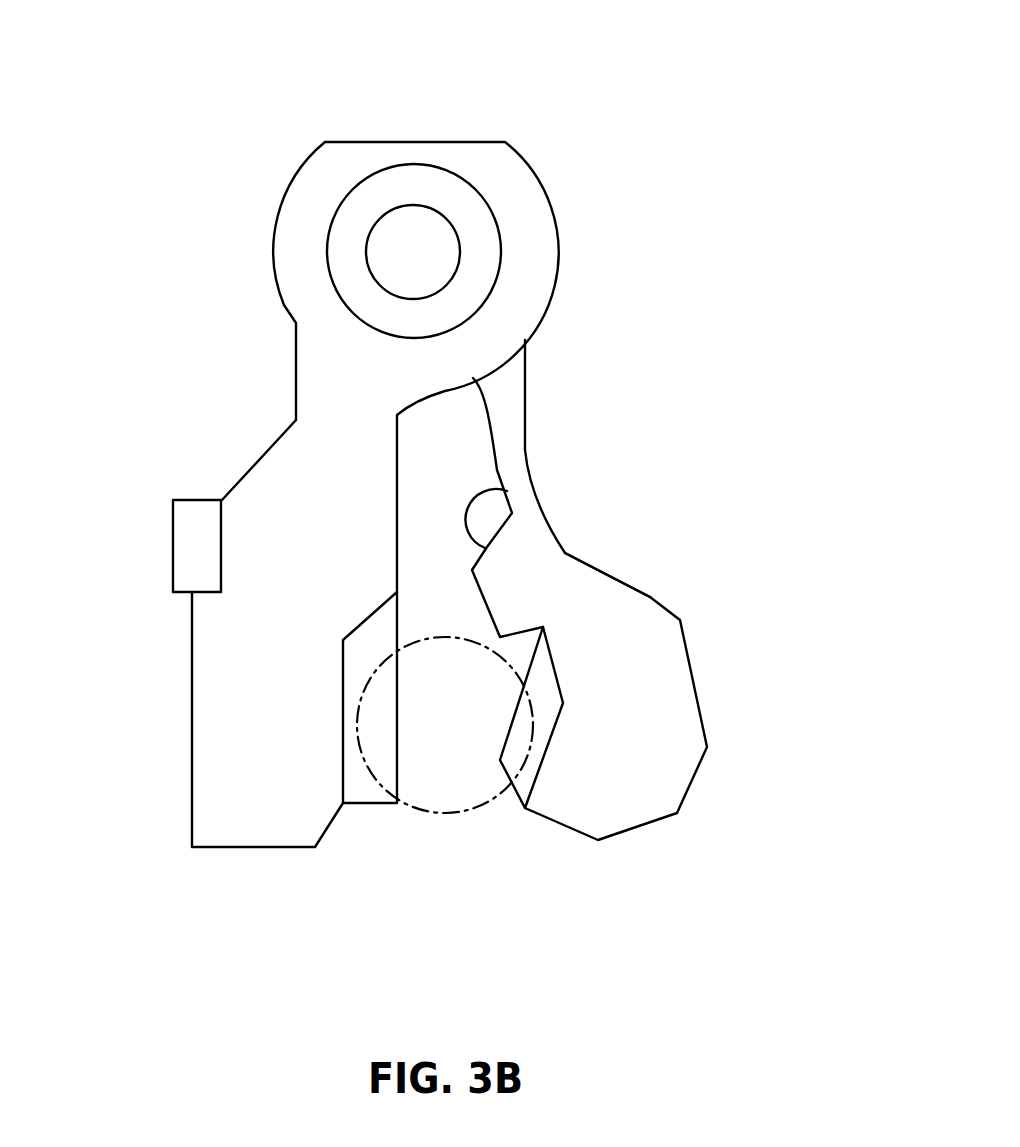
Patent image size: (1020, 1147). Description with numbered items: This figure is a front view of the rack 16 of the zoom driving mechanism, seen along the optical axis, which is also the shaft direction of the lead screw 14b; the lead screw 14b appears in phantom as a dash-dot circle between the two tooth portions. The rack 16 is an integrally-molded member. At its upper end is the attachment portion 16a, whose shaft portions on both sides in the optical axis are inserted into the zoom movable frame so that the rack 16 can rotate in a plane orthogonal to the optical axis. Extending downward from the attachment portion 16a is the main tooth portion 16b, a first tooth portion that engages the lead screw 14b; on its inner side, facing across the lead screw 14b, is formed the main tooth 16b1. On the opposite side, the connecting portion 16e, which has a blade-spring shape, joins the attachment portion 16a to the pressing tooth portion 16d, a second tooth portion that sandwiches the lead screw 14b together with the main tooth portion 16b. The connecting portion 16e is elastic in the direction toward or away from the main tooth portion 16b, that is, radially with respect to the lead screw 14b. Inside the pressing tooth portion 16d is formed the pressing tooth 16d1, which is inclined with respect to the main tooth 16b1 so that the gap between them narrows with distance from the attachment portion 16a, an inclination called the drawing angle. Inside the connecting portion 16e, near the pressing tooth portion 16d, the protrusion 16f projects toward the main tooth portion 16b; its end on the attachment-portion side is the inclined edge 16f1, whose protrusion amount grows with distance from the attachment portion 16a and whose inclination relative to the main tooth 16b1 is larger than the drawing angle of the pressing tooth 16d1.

The rack 16 is at (580, 182).
The attachment portion 16a is at (410, 197).
The main tooth portion 16b is at (225, 770).
The main tooth 16b1 is at (367, 790).
The connecting portion 16e is at (520, 458).
The protrusion 16f is at (487, 607).
The inclined edge 16f1 is at (508, 491).
The pressing tooth portion 16d is at (648, 710).
The pressing tooth 16d1 is at (558, 720).
The lead screw 14b is at (450, 812).